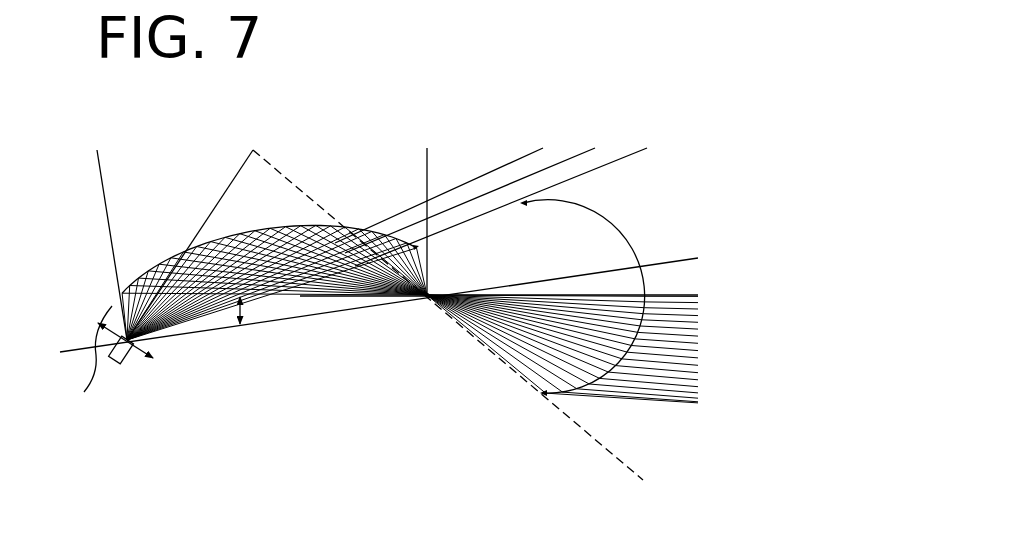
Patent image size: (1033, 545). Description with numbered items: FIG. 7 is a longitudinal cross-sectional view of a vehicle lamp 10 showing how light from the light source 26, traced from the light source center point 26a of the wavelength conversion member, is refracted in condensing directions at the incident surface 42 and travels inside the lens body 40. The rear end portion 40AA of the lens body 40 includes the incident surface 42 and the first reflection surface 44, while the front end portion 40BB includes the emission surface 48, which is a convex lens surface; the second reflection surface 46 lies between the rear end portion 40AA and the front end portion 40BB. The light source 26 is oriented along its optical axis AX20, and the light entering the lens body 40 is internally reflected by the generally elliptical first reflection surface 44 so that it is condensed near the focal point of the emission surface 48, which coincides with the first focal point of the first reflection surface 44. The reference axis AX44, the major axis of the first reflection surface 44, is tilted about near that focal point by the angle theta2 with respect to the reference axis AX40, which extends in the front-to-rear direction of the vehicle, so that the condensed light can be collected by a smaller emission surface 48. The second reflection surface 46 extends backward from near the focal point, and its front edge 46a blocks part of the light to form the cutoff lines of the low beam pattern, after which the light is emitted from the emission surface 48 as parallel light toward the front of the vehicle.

The vehicle lamp 10 is at (357, 149).
The lens body 40 is at (410, 315).
The rear end portion 40AA is at (145, 214).
The front end portion 40BB is at (634, 197).
The light source 26 is at (121, 363).
The light source center point 26a is at (120, 313).
The incident surface 42 is at (93, 359).
The first reflection surface 44 is at (251, 231).
The second reflection surface 46 is at (357, 298).
The front edge 46a is at (427, 298).
The emission surface 48 is at (620, 240).
The optical axis AX20 (AX26) AX20 is at (237, 177).
The reference axis AX40 is at (670, 296).
The reference axis AX44 is at (550, 281).
The angle theta2 is at (257, 311).